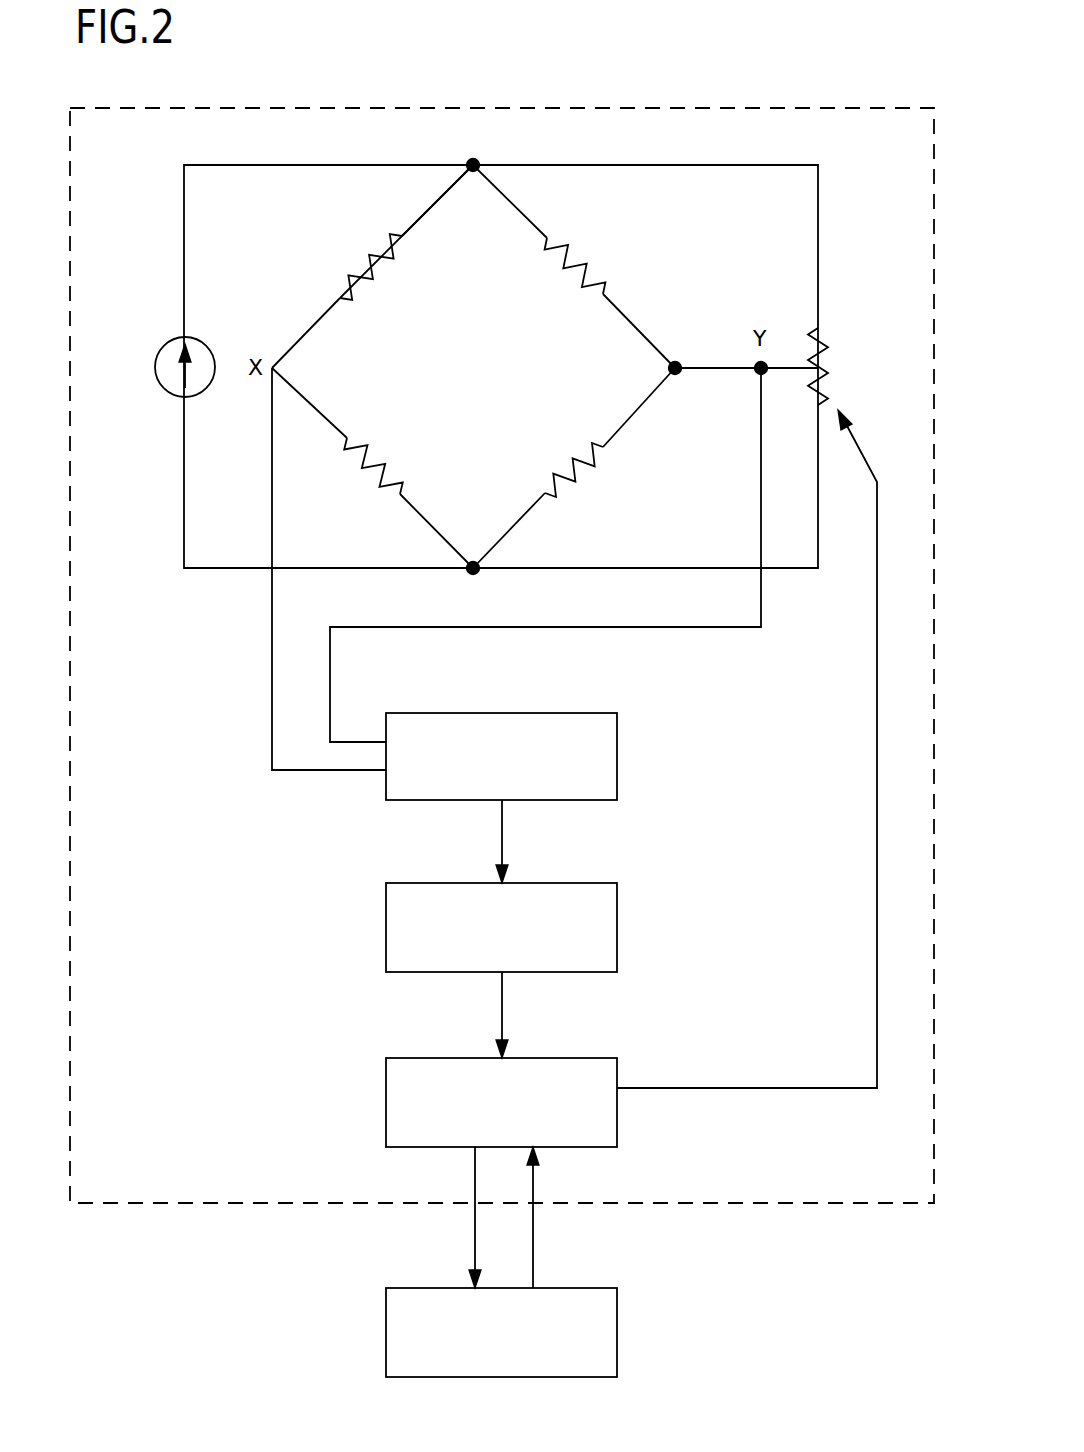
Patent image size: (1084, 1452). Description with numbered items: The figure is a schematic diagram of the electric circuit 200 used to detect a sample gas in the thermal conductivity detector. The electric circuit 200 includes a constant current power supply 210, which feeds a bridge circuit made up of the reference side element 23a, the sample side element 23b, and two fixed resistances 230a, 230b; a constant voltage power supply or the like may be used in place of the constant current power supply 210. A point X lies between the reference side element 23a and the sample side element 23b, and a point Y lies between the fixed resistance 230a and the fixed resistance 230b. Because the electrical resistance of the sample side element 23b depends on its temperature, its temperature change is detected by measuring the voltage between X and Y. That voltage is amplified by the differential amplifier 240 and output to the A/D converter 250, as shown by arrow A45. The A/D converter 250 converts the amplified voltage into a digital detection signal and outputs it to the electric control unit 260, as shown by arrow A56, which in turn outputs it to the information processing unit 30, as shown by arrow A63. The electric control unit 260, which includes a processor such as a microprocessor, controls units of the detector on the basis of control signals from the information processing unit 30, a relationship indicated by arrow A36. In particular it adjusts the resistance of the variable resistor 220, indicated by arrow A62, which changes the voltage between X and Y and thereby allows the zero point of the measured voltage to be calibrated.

The electric circuit 200 is at (475, 108).
The constant current power supply 210 is at (185, 337).
The variable resistor 220 is at (788, 366).
The reference side element 23a is at (367, 475).
The sample side element 23b is at (355, 267).
The fixed resistance 230a is at (598, 477).
The fixed resistance 230b is at (598, 266).
The differential amplifier 240 is at (560, 713).
The analog-to-digital (A/D) converter 250 is at (560, 883).
The electric control unit 260 is at (560, 1058).
The information processing unit 30 is at (617, 1345).
The arrow A45 is at (502, 840).
The arrow A56 is at (502, 1013).
The arrow A62 is at (703, 1088).
The arrow A63 is at (475, 1240).
The arrow A36 is at (533, 1252).